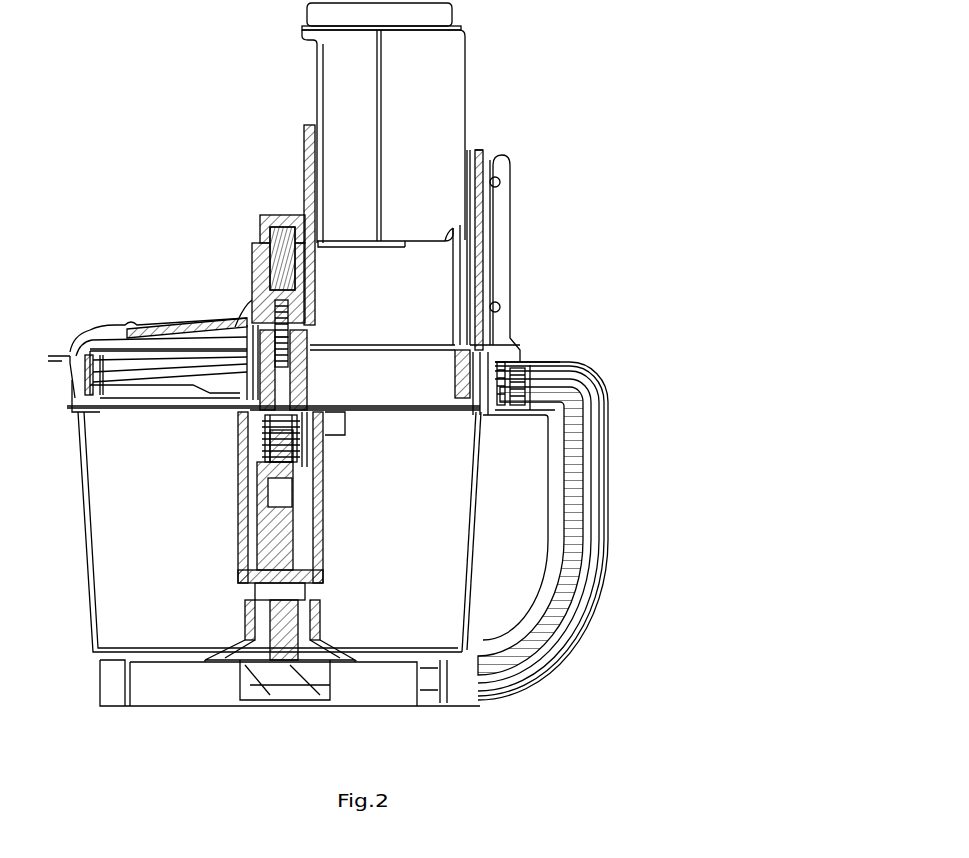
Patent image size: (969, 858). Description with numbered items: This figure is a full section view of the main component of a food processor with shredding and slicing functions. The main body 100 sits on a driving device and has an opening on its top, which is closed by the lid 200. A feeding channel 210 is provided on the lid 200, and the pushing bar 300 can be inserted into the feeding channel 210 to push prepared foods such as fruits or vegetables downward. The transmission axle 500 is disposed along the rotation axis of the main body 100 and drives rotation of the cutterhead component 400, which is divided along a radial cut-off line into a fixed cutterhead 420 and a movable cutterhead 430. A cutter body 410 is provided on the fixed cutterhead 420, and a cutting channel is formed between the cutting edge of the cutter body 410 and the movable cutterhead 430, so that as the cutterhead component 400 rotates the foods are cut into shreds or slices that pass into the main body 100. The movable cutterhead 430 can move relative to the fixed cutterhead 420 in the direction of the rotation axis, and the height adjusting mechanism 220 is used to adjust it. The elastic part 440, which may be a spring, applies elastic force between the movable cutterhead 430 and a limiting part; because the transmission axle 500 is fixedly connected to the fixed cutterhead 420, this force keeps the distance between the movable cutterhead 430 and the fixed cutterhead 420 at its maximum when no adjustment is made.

The main body 100 is at (625, 573).
The lid 200 is at (540, 311).
The feeding channel 210 is at (445, 271).
The height adjusting mechanism 220 is at (222, 224).
The pushing bar 300 is at (465, 70).
The cutterhead component 400 is at (182, 430).
The cutter body 410 is at (500, 396).
The fixed cutterhead 420 is at (495, 362).
The movable cutterhead 430 is at (183, 358).
The elastic part 440 is at (303, 442).
The transmission axle 500 is at (338, 428).